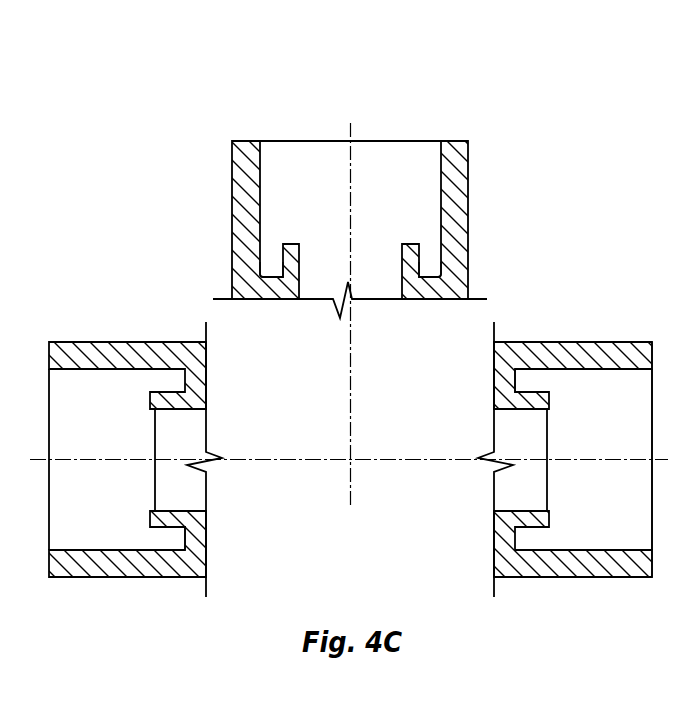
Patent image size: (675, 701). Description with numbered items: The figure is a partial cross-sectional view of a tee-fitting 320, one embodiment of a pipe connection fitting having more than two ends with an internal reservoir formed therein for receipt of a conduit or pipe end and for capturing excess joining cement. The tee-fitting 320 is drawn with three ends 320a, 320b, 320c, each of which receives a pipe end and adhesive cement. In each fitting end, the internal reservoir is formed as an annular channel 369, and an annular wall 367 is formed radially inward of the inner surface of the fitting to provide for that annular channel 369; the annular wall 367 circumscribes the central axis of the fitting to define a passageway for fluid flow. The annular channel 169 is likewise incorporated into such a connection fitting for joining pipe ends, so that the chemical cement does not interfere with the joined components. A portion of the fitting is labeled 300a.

The tee-fitting 320 is at (630, 75).
The fitting end 320a is at (250, 141).
The fitting end 320b is at (125, 342).
The fitting end 320c is at (632, 342).
The annular wall 367 is at (286, 264).
The annular channel 369 is at (529, 380).
The housing 300a is at (600, 342).
The annular channel 169 is at (167, 538).